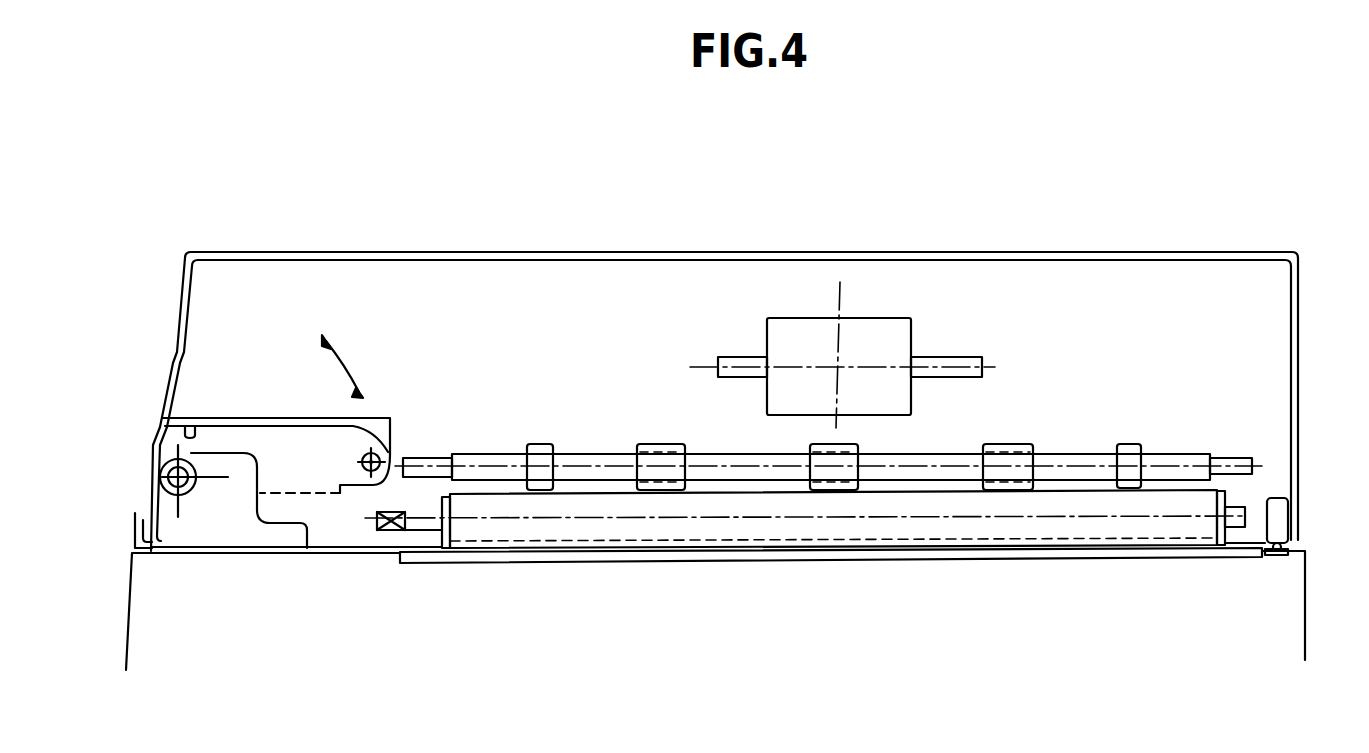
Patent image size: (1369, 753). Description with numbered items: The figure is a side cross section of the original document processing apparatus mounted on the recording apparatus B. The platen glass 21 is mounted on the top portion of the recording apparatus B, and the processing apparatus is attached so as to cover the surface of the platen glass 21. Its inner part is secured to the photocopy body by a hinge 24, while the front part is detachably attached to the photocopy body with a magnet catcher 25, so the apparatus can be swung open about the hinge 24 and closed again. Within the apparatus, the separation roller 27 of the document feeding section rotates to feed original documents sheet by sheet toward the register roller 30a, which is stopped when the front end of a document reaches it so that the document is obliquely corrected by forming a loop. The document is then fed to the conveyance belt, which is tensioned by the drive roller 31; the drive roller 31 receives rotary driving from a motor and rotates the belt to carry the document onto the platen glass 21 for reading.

The platen glass 21 is at (1183, 555).
The hinge 24 is at (177, 507).
The magnet catcher 25 is at (1283, 518).
The separation roller 27 is at (875, 335).
The register roller 30a is at (1133, 448).
The drive roller 31 is at (1190, 487).
The recording apparatus B is at (158, 608).